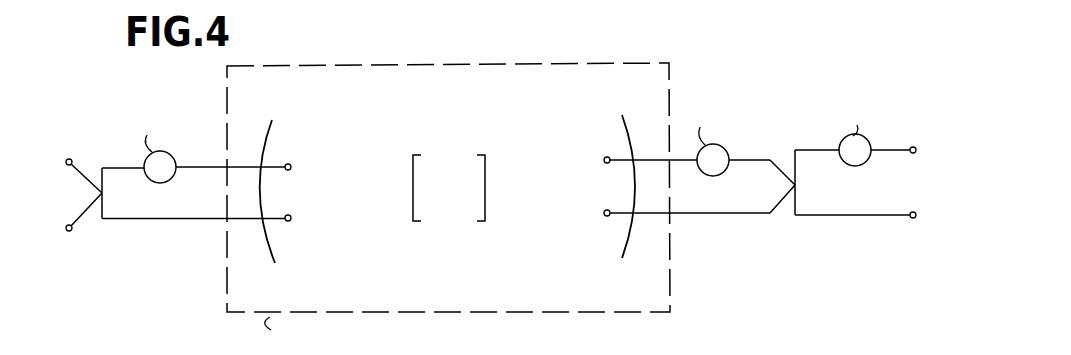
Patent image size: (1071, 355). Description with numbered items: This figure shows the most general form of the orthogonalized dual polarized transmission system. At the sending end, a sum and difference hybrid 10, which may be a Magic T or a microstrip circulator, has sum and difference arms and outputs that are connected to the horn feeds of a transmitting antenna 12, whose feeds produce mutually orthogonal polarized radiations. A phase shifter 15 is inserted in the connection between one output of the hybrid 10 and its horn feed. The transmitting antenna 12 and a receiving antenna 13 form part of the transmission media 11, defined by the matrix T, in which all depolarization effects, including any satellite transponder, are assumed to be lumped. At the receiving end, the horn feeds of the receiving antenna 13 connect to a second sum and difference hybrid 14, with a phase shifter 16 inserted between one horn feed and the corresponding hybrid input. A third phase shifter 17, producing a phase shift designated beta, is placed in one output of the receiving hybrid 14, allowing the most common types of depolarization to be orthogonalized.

The sum and difference hybrid 10 is at (97, 153).
The transmission media 11 is at (612, 63).
The transmitting antenna 12 is at (274, 130).
The receiving antenna 13 is at (620, 125).
The sum and difference hybrid 14 is at (787, 129).
The phase shifter 15 is at (171, 181).
The phase shifter 16 is at (722, 175).
The third phase shifter 17 is at (851, 165).